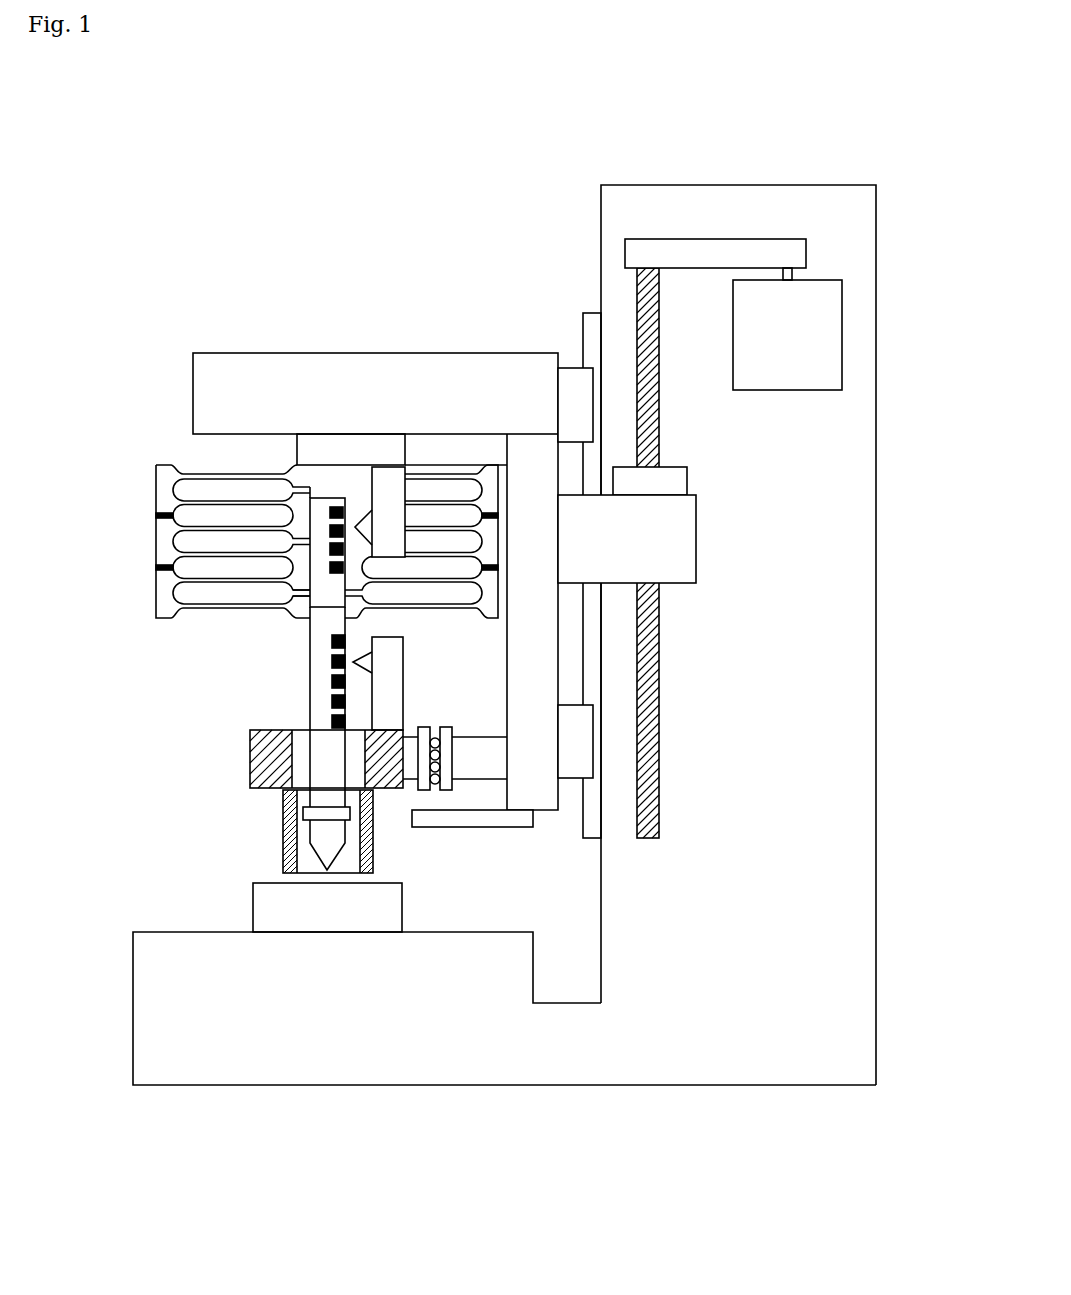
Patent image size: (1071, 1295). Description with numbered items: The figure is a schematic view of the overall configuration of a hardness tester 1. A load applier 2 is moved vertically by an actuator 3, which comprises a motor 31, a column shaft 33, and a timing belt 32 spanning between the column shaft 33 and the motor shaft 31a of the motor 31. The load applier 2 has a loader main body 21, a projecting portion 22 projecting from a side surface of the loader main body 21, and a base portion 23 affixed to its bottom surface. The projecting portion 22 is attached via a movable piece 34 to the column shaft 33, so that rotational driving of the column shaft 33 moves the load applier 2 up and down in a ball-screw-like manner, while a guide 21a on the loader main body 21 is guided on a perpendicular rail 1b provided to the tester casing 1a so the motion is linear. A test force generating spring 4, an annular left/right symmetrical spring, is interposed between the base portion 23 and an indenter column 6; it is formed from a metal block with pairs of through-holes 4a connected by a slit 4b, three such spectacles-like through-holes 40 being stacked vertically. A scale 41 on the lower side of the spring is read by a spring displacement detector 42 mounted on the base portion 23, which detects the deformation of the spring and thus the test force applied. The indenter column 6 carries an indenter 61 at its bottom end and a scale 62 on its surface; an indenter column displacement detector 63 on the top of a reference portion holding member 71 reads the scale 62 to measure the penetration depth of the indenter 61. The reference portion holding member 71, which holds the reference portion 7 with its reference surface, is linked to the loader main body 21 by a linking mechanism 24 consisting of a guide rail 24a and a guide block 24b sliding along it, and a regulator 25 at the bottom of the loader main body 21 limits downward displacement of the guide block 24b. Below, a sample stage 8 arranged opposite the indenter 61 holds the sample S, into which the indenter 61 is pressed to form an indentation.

The hardness tester 1 is at (456, 156).
The tester casing 1a is at (605, 222).
The perpendicular rail 1b is at (590, 316).
The load applier 2 is at (225, 338).
The loader main body 21 is at (345, 381).
The guide 21a is at (575, 388).
The projecting portion 22 is at (683, 551).
The base portion 23 is at (318, 452).
The linking mechanism 24 is at (475, 954).
The guide rail 24a is at (449, 790).
The guide block 24b is at (424, 790).
The regulator 25 is at (517, 824).
The actuator 3 is at (772, 223).
The motor 31 is at (825, 343).
The motor shaft 31a is at (793, 275).
The timing belt 32 is at (715, 258).
The column shaft 33 is at (653, 310).
The movable piece 34 is at (683, 484).
The test force generating spring 4 is at (146, 534).
The spectacles-like through-holes 40 is at (183, 541).
The through-holes 4a is at (190, 597).
The slit 4b is at (303, 596).
The scale 41 is at (330, 546).
The spring displacement detector 42 is at (385, 527).
The indenter column 6 is at (316, 716).
The indenter 61 is at (325, 861).
The scale 62 is at (328, 669).
The indenter column displacement detector 63 is at (398, 698).
The reference portion 7 is at (286, 823).
The reference portion holding member 71 is at (256, 771).
The sample stage 8 is at (178, 946).
The sample S is at (266, 918).